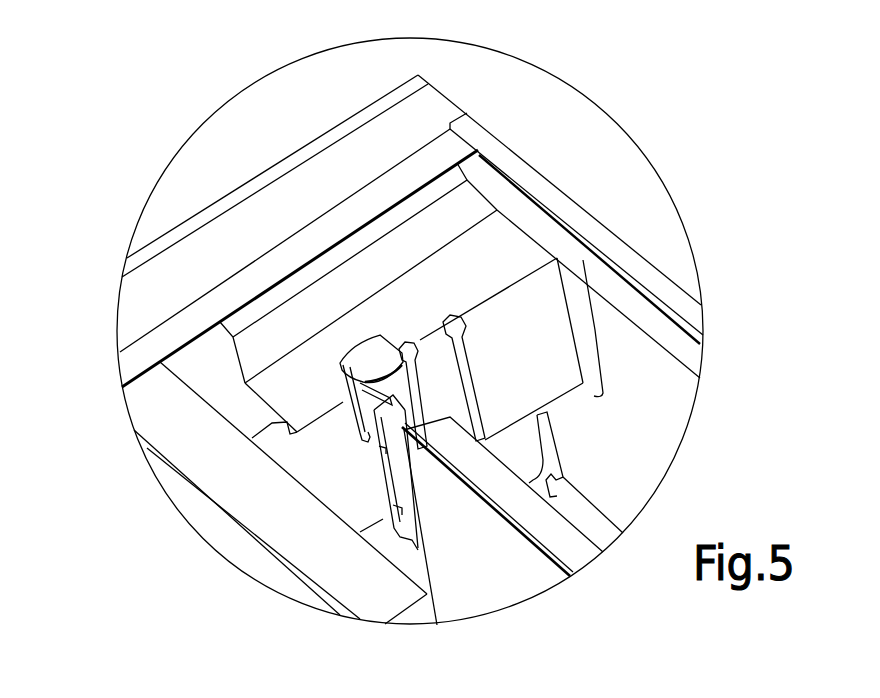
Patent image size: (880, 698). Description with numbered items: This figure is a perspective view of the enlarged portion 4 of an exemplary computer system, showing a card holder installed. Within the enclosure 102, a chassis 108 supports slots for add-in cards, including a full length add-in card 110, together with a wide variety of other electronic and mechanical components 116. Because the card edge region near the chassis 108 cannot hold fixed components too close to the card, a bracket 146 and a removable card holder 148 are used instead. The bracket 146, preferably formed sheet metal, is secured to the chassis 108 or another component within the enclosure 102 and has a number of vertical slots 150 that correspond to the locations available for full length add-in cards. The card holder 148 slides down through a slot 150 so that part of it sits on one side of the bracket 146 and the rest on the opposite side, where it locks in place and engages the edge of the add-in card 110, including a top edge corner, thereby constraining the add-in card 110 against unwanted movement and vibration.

The enlarged portion 4 is at (636, 118).
The enclosure 102 is at (228, 122).
The chassis 108 is at (622, 450).
The add-in card 110 is at (480, 545).
The electronic and mechanical components 116 is at (215, 462).
The bracket 146 is at (528, 315).
The card holder 148 is at (372, 455).
The vertical slots 150 is at (420, 375).